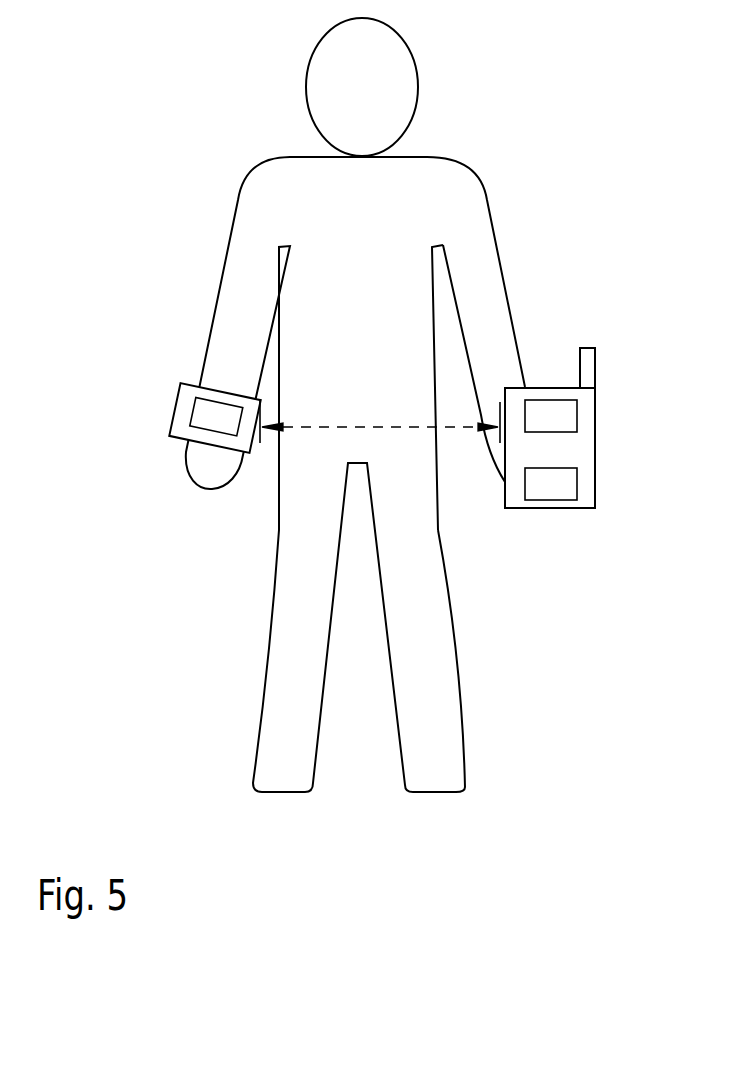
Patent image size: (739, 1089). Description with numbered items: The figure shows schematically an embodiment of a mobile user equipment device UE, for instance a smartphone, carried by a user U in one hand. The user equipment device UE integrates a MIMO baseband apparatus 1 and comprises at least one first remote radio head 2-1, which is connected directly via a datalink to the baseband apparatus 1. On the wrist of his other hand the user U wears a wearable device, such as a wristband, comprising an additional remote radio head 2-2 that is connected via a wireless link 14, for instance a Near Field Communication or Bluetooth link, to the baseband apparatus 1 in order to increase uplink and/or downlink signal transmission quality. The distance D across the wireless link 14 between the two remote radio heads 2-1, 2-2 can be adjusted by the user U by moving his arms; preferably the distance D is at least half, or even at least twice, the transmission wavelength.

The user U is at (492, 82).
The user equipment device UE is at (550, 428).
The MIMO baseband apparatus 1 is at (551, 484).
The first remote radio head 2-1 is at (551, 416).
The additional remote radio head 2-2 is at (214, 418).
The wireless link 14 is at (365, 425).
The distance D is at (380, 432).